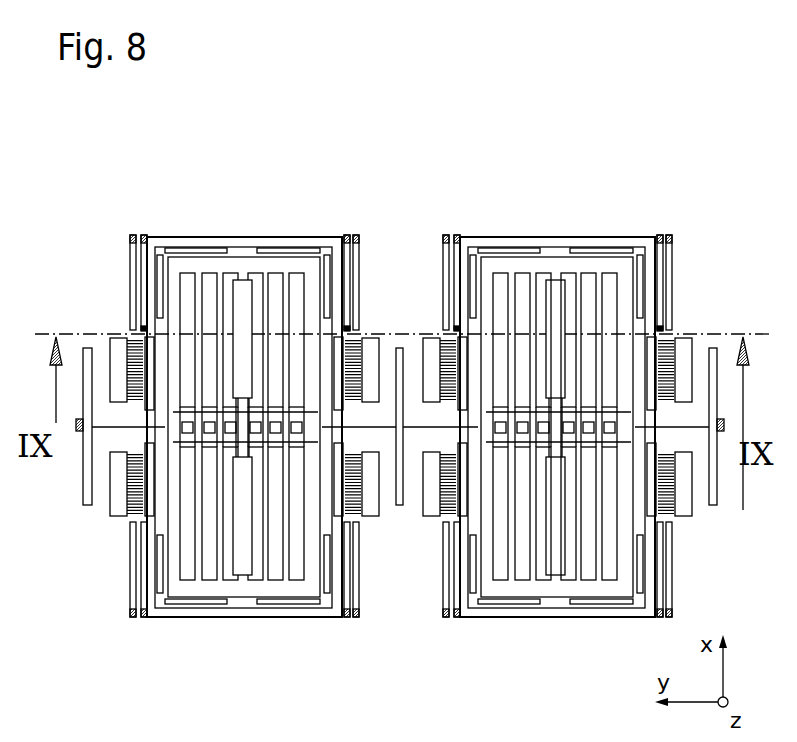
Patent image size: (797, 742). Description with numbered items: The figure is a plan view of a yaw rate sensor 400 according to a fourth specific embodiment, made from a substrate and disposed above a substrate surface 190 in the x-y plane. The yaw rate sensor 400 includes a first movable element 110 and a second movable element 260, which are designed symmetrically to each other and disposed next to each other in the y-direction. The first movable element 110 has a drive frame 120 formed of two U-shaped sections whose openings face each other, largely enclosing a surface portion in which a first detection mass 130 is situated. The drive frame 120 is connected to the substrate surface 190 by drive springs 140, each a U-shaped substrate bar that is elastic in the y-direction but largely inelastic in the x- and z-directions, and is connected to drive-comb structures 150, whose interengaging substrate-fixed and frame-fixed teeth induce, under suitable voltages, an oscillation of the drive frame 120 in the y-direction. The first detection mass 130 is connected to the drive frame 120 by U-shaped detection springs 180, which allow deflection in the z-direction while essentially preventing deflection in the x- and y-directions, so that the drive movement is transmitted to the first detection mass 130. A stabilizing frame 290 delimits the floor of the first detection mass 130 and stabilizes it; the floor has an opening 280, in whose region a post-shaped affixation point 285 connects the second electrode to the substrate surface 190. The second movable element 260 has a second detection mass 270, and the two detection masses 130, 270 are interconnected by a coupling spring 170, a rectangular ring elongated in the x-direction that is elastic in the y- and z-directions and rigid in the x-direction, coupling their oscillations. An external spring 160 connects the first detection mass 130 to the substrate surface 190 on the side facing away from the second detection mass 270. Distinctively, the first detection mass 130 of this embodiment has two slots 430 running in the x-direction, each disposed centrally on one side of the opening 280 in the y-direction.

The yaw rate sensor 400 is at (96, 178).
The first movable element 110 is at (339, 232).
The drive frame 120 is at (288, 240).
The first detection mass 130 is at (240, 270).
The drive spring 140 is at (133, 283).
The drive-comb structure 150 is at (117, 505).
The external spring 160 is at (83, 480).
The coupling spring 170 is at (400, 348).
The detection spring 180 is at (283, 607).
The substrate surface 190 is at (511, 198).
The second movable element 260 is at (640, 232).
The second detection mass 270 is at (578, 268).
The opening 280 is at (253, 443).
The affixation point 285 is at (220, 428).
The stabilizing frame 290 is at (313, 550).
The slot 430 is at (243, 313).